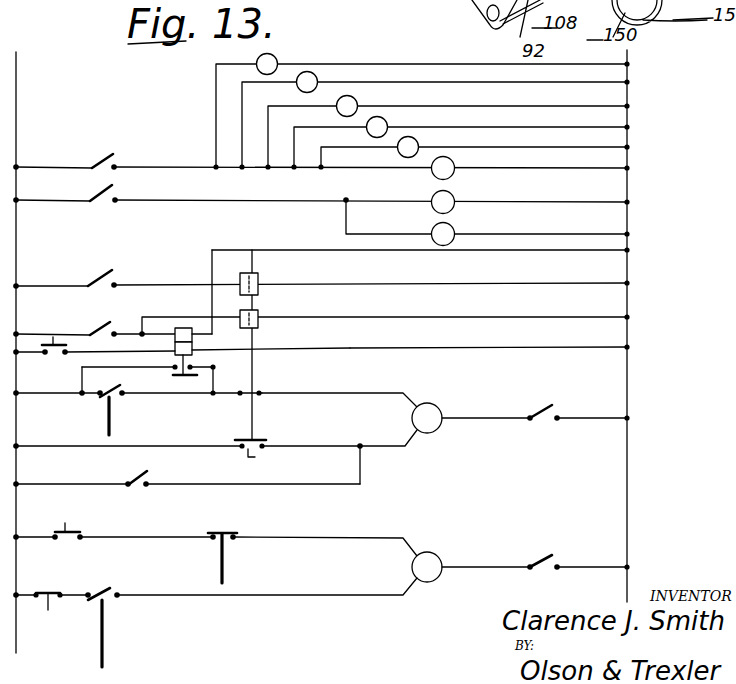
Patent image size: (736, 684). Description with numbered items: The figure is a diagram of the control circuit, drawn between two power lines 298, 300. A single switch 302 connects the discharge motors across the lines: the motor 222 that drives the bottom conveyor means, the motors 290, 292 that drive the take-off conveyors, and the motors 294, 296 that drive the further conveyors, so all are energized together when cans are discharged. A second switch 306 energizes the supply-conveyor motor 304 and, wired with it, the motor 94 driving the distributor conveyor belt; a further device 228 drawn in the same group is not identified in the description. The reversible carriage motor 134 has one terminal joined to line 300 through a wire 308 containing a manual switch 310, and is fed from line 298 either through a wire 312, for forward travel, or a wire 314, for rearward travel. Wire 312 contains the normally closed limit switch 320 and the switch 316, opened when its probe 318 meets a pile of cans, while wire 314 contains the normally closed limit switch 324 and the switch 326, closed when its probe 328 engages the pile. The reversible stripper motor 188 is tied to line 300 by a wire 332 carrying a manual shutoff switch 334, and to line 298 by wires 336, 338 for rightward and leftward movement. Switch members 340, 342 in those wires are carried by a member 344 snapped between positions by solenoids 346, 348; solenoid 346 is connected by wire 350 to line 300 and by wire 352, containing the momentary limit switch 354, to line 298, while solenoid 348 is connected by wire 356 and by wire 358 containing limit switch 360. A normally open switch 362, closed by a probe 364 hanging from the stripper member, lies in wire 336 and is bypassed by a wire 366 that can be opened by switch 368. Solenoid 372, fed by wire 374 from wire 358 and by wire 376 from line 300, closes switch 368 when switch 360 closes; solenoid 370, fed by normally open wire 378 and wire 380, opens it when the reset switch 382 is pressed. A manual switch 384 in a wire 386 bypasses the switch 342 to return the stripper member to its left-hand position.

The power line 298 is at (18, 68).
The power line 300 is at (627, 145).
The switch 302 is at (103, 153).
The switch 306 is at (110, 192).
The motor 296 is at (275, 58).
The motor 294 is at (300, 92).
The motor 292 is at (348, 96).
The motor 290 is at (380, 117).
The motor 222 is at (422, 146).
The lamp 228 is at (458, 160).
The motor 304 is at (457, 200).
The motor 94 is at (457, 222).
The wire 376 is at (252, 250).
The wire 374 is at (157, 330).
The wire 352 is at (45, 283).
The momentary contact limit switch 354 is at (100, 272).
The wire 350 is at (413, 283).
The solenoid 346 is at (255, 273).
The wire 356 is at (428, 317).
The solenoid 348 is at (258, 312).
The wire 358 is at (43, 334).
The momentary contact limit switch 360 is at (104, 327).
The solenoid 372 is at (185, 328).
The solenoid 370 is at (192, 350).
The reset switch 382 is at (42, 361).
The wire 378 is at (80, 352).
The member 344 is at (272, 347).
The wire 380 is at (413, 347).
The switch 368 is at (178, 373).
The wire 366 is at (77, 397).
The switch 362 is at (117, 403).
The probe 364 is at (115, 424).
The switch member 340 is at (262, 393).
The wire 336 is at (307, 393).
The reversible motor 188 is at (440, 405).
The wire 332 is at (507, 415).
The manual shutoff switch 334 is at (557, 412).
The switch member 342 is at (243, 433).
The wire 338 is at (310, 443).
The wire 386 is at (52, 481).
The manual switch 384 is at (137, 475).
The limit switch 320 is at (62, 528).
The switch 316 is at (227, 532).
The probe 318 is at (224, 568).
The wire 312 is at (293, 542).
The reversible motor 134 is at (440, 562).
The wire 308 is at (483, 572).
The manual switch 310 is at (560, 560).
The limit switch 324 is at (58, 608).
The switch 326 is at (103, 585).
The probe 328 is at (105, 638).
The wire 314 is at (272, 600).